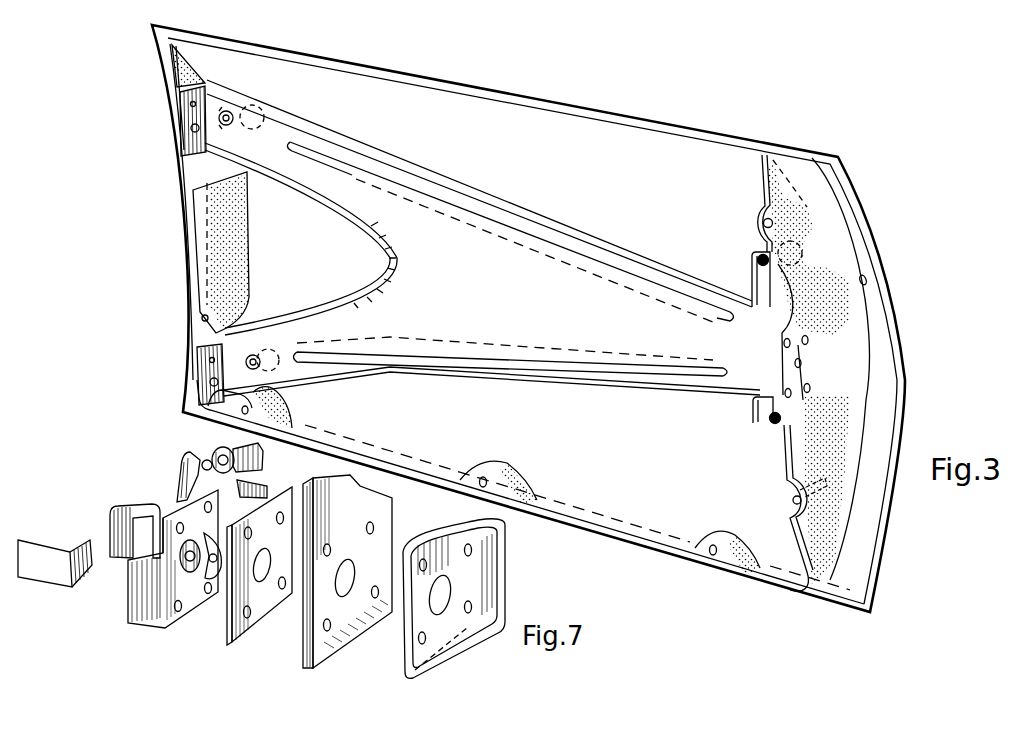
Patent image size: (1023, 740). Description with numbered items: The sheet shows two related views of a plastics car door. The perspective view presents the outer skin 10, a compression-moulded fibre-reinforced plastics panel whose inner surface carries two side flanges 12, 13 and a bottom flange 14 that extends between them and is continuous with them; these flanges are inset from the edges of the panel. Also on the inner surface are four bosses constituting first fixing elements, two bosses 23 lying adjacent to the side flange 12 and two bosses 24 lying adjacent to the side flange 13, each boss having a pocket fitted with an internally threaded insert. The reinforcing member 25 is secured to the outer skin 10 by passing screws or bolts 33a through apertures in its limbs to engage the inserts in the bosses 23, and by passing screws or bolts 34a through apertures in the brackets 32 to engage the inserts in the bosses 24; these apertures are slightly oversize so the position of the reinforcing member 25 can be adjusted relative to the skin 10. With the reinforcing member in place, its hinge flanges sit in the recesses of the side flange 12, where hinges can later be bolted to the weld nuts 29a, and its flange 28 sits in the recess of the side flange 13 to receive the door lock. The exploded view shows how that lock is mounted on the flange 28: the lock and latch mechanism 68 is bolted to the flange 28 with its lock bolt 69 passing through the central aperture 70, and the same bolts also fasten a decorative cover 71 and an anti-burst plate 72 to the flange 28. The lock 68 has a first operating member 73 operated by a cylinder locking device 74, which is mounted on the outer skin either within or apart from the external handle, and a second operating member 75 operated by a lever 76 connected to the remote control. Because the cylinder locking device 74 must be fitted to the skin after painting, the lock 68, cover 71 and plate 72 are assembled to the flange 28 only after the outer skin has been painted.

In FIG. 3, the outer skin 10 is at (626, 105).
In FIG. 3, the side flange 12 is at (203, 262).
In FIG. 3, the side flange 13 is at (837, 437).
In FIG. 3, the bottom flange 14 is at (609, 522).
In FIG. 3, the bosses 23 is at (262, 110).
In FIG. 3, the bosses 24 is at (802, 250).
In FIG. 3, the reinforcing member 25 is at (554, 212).
In FIG. 7, the flange 28 is at (245, 635).
In FIG. 3, the weld nuts 29a is at (186, 105).
In FIG. 3, the brackets 32 is at (750, 273).
In FIG. 3, the screws or bolts 33a is at (243, 123).
In FIG. 3, the screws or bolts 34a is at (761, 256).
In FIG. 7, the lock and latch mechanism 68 is at (158, 628).
In FIG. 7, the lock bolt 69 is at (209, 574).
In FIG. 7, the central aperture 70 is at (268, 585).
In FIG. 7, the decorative cover 71 is at (350, 630).
In FIG. 7, the anti-burst plate 72 is at (432, 663).
In FIG. 7, the first operating member 73 is at (177, 472).
In FIG. 7, the cylinder locking device 74 is at (263, 460).
In FIG. 7, the second operating member 75 is at (120, 507).
In FIG. 7, the lever 76 is at (34, 558).